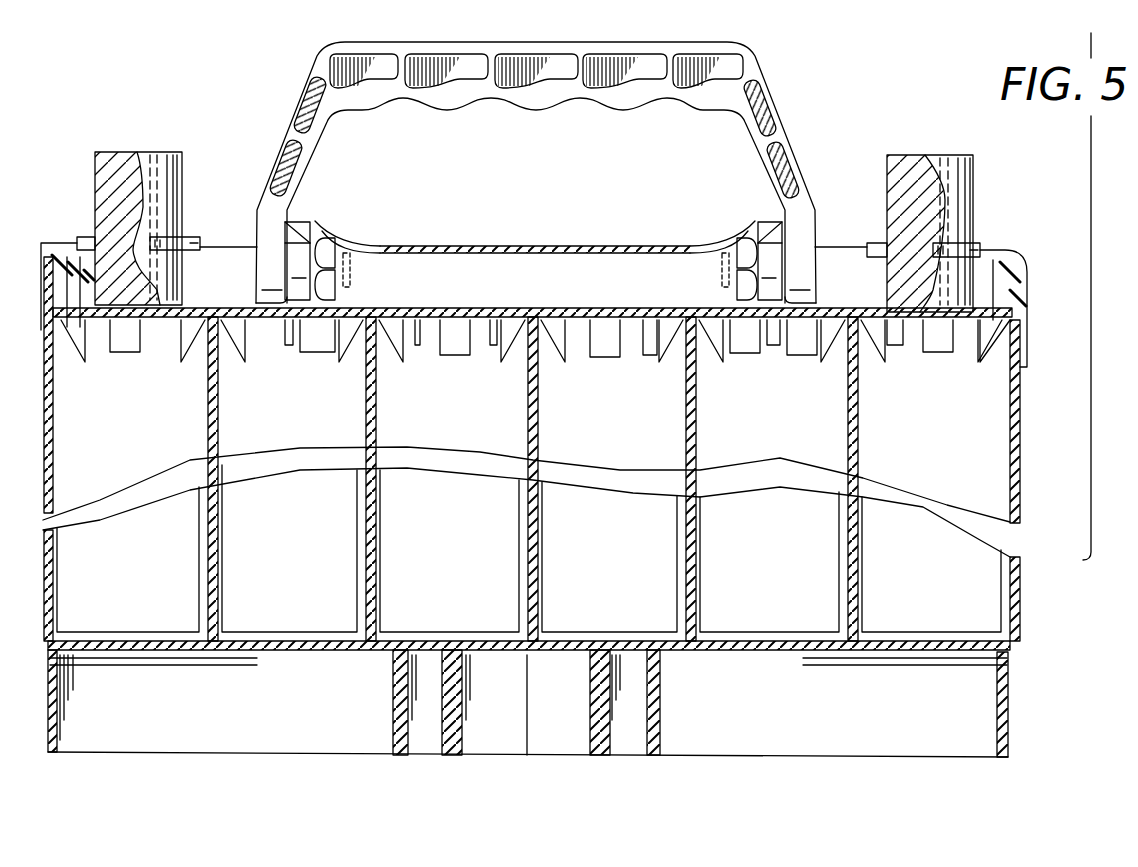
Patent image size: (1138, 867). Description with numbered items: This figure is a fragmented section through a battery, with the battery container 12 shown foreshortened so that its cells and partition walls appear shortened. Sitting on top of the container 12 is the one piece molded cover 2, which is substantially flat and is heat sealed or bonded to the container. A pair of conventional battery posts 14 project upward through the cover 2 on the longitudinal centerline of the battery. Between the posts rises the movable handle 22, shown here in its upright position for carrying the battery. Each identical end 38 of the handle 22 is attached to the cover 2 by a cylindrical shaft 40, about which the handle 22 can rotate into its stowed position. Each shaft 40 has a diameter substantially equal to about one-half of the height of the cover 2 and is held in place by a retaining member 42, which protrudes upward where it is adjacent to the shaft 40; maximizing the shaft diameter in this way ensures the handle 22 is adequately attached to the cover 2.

The battery cover 2 is at (1030, 284).
The battery container 12 is at (1015, 488).
The battery posts 14 is at (95, 195).
The movable handle 22 is at (772, 70).
The handle end 38 is at (263, 287).
The cylindrical shaft 40 is at (307, 260).
The retaining member 42 is at (482, 247).